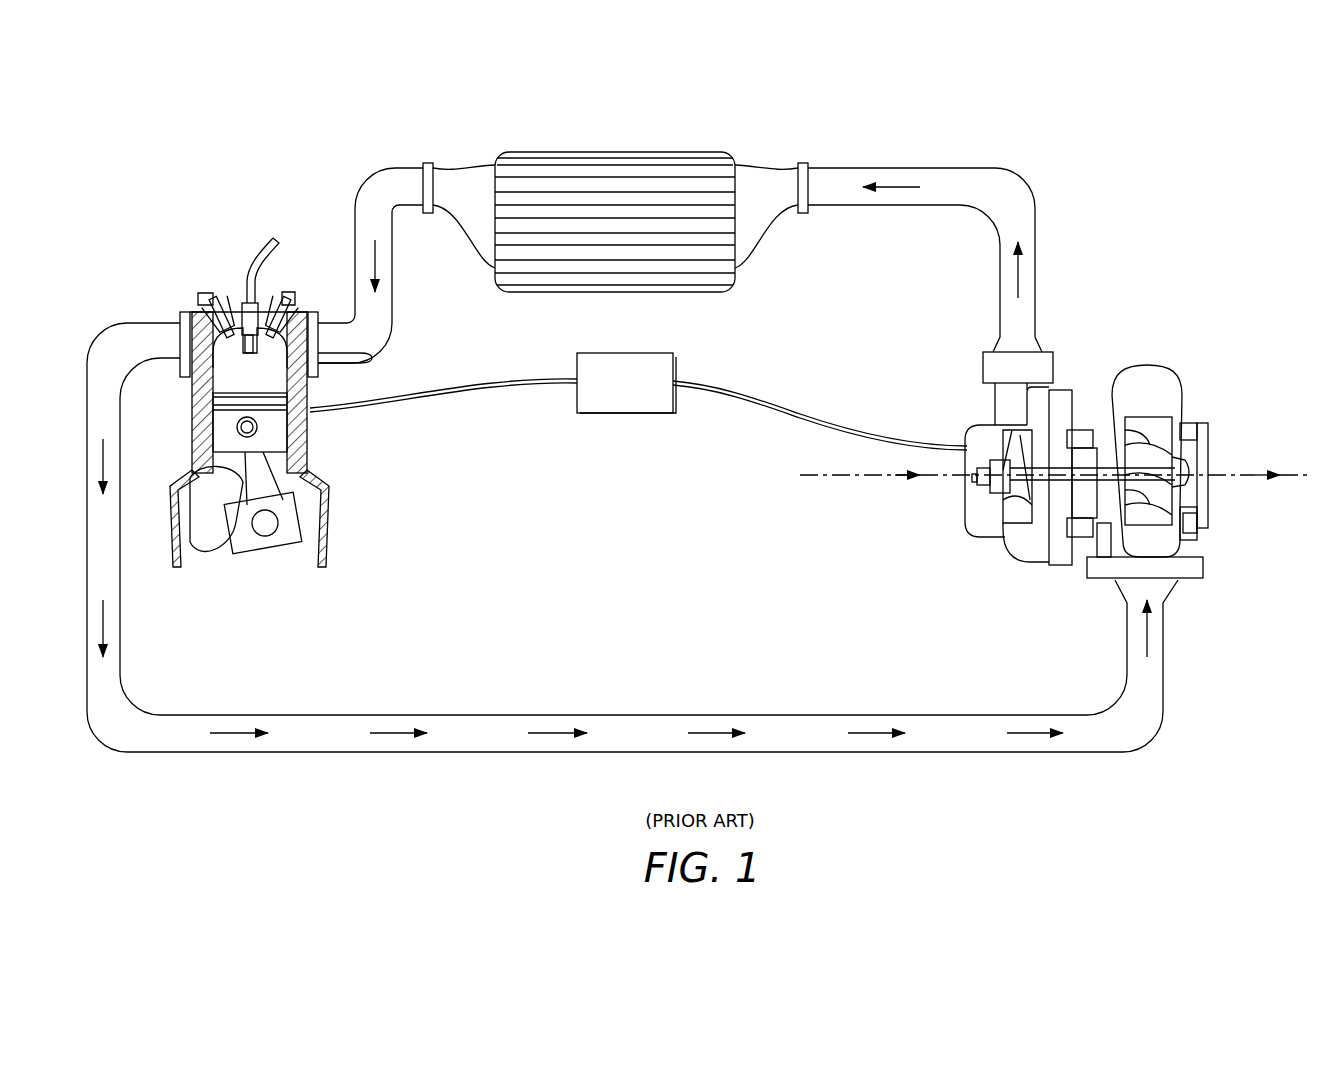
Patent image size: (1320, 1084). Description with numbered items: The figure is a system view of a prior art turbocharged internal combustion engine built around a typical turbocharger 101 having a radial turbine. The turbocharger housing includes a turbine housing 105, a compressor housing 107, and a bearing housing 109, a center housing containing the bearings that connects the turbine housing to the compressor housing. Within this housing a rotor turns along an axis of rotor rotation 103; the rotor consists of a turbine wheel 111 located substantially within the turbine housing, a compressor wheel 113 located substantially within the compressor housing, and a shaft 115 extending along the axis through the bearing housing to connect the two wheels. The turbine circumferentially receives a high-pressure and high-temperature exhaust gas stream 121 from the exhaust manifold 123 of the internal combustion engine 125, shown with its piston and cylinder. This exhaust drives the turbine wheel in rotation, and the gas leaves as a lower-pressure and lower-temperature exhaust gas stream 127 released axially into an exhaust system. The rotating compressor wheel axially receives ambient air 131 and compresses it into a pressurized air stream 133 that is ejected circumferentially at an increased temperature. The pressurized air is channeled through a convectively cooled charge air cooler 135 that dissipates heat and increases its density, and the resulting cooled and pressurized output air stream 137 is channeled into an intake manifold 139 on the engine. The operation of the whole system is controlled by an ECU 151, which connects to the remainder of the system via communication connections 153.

The turbocharger 101 is at (1062, 392).
The axis of rotor rotation 103 is at (1300, 466).
The turbine housing 105 is at (1168, 392).
The compressor housing 107 is at (967, 428).
The bearing housing 109 is at (1090, 430).
The turbine wheel 111 is at (1143, 463).
The compressor wheel 113 is at (1020, 503).
The shaft 115 is at (1093, 417).
The exhaust gas stream 121 is at (711, 735).
The exhaust manifold 123 is at (216, 303).
The internal combustion engine 125 is at (268, 433).
The lower-pressure and lower-temperature exhaust gas stream 127 is at (1240, 466).
The ambient air 131 is at (845, 468).
The pressurized air stream 133 is at (905, 187).
The charge air cooler 135 is at (608, 176).
The cooled and pressurized output air stream 137 is at (368, 268).
The intake manifold 139 is at (372, 358).
The ECU 151 is at (625, 353).
The communication connections 153 is at (723, 397).